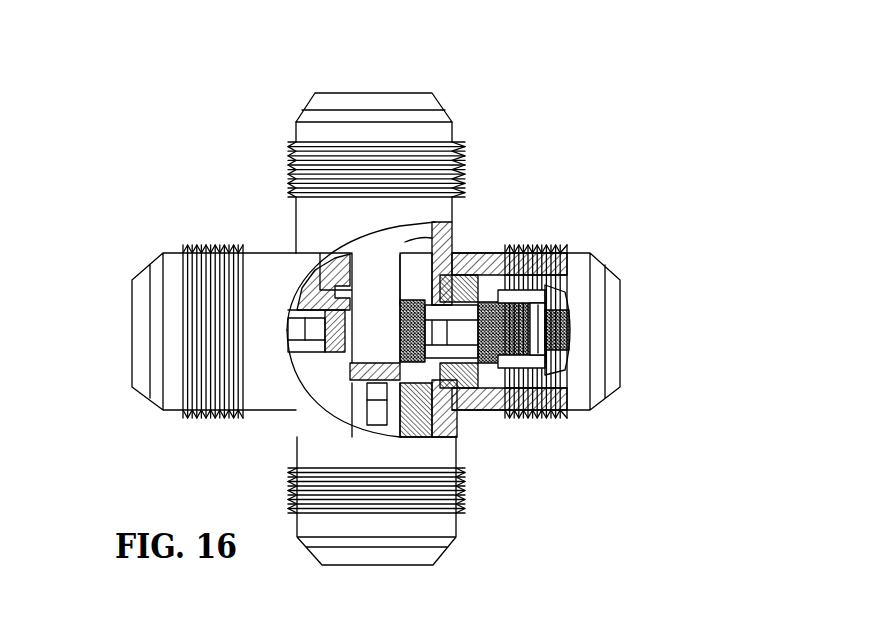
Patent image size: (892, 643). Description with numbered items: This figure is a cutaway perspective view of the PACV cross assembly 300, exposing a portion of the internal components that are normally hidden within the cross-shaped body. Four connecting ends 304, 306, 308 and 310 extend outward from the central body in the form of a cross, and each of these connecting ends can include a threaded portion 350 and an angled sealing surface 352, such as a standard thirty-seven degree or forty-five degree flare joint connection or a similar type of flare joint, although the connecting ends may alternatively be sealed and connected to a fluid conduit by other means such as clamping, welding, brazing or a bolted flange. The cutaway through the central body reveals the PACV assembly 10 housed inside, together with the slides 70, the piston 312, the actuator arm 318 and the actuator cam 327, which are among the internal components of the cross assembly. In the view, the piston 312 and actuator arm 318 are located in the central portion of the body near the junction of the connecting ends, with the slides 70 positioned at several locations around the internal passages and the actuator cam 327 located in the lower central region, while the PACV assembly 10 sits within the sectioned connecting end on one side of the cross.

The PACV cross assembly 300 is at (570, 100).
The connecting end 310 is at (438, 137).
The angled sealing surface 352 is at (445, 108).
The threaded portion 350 is at (462, 178).
The connecting end 304 is at (160, 400).
The connecting end 306 is at (598, 393).
The connecting end 308 is at (447, 547).
The piston 312 is at (403, 242).
The actuator arm 318 is at (345, 295).
The slide 70 is at (308, 318).
The actuator cam 327 is at (377, 343).
The PACV assembly 10 is at (470, 368).